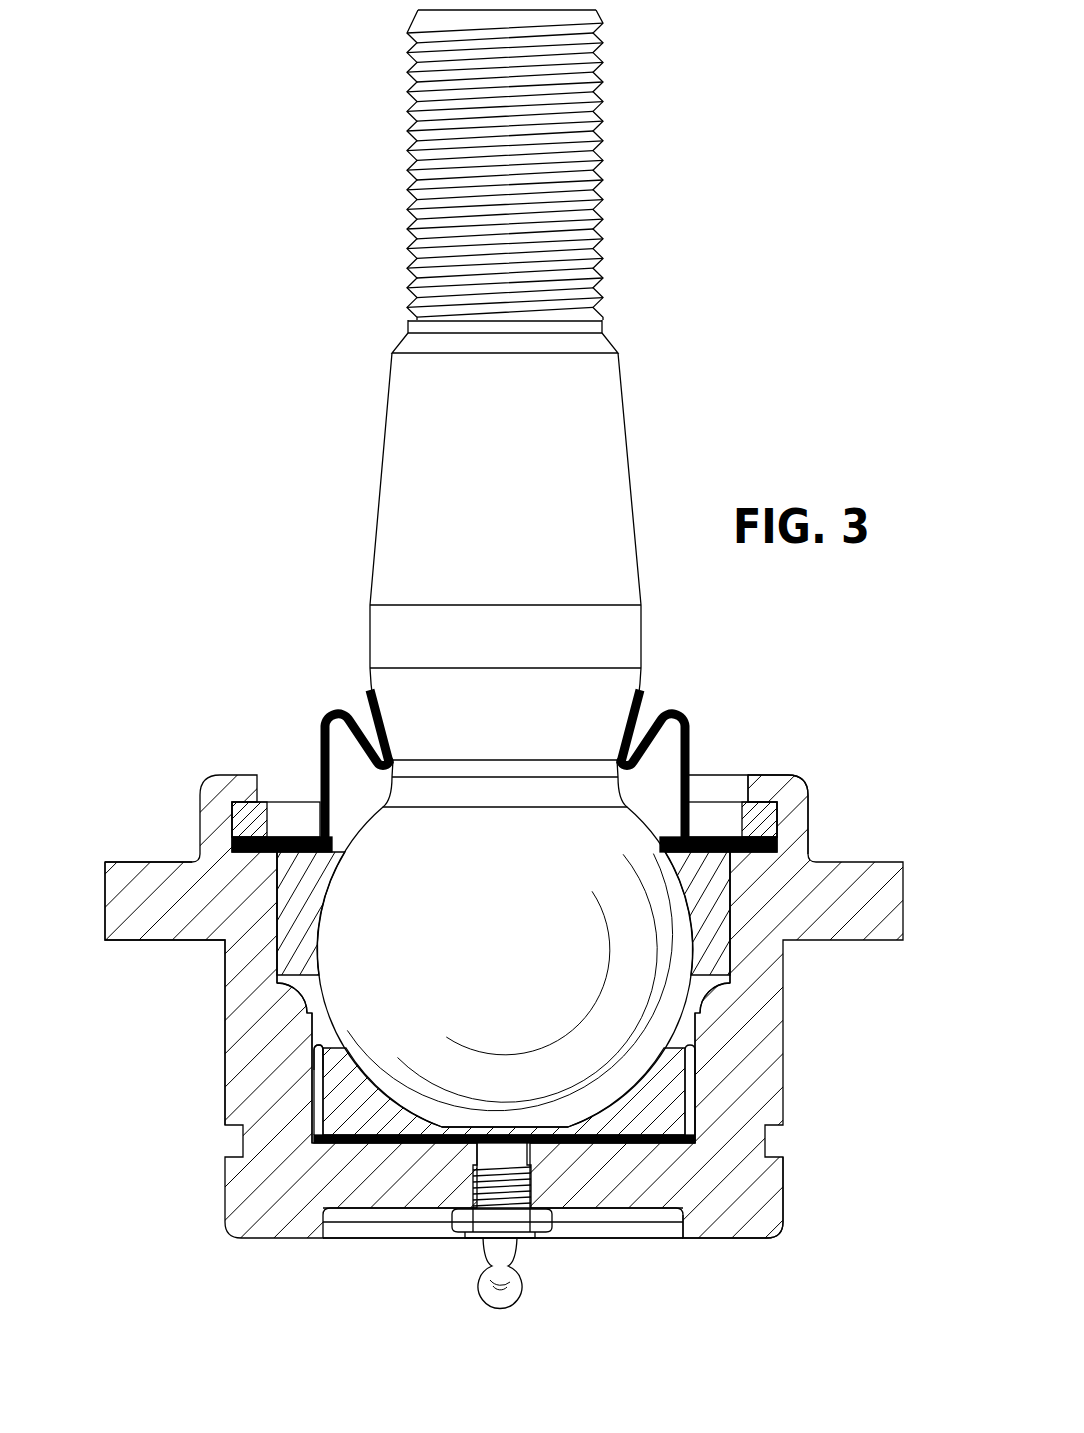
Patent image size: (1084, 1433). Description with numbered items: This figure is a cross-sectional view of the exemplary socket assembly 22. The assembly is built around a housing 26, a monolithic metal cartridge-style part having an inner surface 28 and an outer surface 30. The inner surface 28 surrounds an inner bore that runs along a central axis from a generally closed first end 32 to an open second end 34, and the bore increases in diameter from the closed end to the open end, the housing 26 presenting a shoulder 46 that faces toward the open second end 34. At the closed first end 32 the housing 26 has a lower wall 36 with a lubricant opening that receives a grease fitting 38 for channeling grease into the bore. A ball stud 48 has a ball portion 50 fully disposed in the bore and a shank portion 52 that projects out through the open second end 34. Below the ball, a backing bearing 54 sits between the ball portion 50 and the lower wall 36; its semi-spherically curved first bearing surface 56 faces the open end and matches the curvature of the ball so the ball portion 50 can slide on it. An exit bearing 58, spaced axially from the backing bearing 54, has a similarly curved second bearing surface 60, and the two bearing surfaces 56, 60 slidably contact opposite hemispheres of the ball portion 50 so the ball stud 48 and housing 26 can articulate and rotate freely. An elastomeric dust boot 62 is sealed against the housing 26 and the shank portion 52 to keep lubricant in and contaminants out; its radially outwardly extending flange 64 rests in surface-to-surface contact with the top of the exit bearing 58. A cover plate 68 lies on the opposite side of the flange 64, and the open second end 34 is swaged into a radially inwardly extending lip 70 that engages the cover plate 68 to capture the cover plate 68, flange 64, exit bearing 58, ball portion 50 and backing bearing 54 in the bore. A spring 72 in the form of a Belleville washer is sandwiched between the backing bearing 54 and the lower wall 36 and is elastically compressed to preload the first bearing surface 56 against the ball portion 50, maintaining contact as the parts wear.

The socket assembly 22 is at (0, 0).
The housing 26 is at (542, 1005).
The inner surface 28 is at (317, 1033).
The outer surface 30 is at (223, 973).
The closed first end 32 is at (658, 1185).
The open second end 34 is at (723, 772).
The lower wall 36 is at (608, 1185).
The grease fitting 38 is at (507, 1282).
The shoulder 46 is at (725, 982).
The ball stud 48 is at (562, 171).
The ball portion 50 is at (515, 955).
The shank portion 52 is at (590, 442).
The backing bearing 54 is at (549, 1089).
The first bearing surface 56 is at (323, 1062).
The exit bearing 58 is at (611, 905).
The second bearing surface 60 is at (322, 923).
The dust boot 62 is at (537, 731).
The flange 64 is at (292, 830).
The cover plate 68 is at (770, 828).
The lip 70 is at (762, 780).
The spring 72 is at (427, 1143).